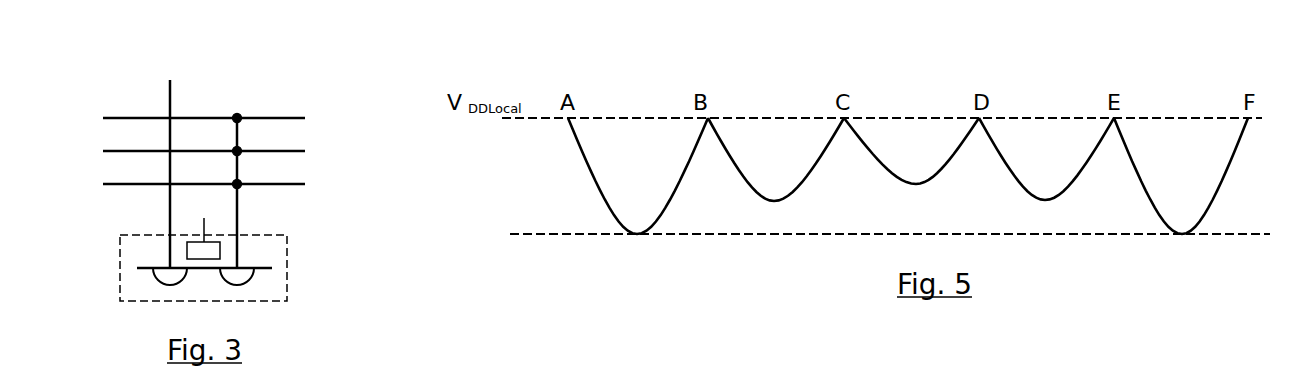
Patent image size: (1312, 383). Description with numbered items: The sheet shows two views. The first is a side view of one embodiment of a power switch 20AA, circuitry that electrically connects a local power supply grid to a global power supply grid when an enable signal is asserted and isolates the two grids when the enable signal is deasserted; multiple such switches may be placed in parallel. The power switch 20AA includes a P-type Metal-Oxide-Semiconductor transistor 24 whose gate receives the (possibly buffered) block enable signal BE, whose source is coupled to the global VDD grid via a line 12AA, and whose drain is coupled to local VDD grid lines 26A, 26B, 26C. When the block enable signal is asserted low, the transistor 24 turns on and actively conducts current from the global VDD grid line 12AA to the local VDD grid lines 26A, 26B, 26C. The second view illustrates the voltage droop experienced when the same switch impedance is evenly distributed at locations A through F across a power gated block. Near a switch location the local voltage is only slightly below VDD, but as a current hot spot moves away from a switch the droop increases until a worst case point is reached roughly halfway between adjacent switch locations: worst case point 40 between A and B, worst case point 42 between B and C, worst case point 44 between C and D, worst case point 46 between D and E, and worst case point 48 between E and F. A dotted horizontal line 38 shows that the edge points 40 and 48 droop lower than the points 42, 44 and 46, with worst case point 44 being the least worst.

In FIG. 3, the global VDD grid line 12AA is at (170, 100).
In FIG. 3, the local VDD grid line 26A is at (274, 184).
In FIG. 3, the local VDD grid line 26B is at (274, 151).
In FIG. 3, the local VDD grid line 26C is at (272, 118).
In FIG. 3, the PMOS transistor 24 is at (287, 235).
In FIG. 3, the power switch 20AA is at (287, 191).
In FIG. 5, the dotted horizontal line 38 is at (535, 234).
In FIG. 5, the worst case point 40 is at (637, 234).
In FIG. 5, the worst case point 42 is at (774, 201).
In FIG. 5, the worst case point 44 is at (916, 184).
In FIG. 5, the worst case point 46 is at (1045, 200).
In FIG. 5, the worst case point 48 is at (1182, 234).